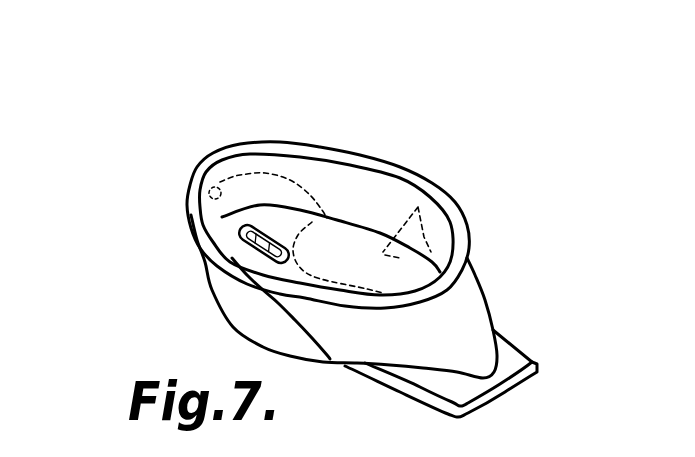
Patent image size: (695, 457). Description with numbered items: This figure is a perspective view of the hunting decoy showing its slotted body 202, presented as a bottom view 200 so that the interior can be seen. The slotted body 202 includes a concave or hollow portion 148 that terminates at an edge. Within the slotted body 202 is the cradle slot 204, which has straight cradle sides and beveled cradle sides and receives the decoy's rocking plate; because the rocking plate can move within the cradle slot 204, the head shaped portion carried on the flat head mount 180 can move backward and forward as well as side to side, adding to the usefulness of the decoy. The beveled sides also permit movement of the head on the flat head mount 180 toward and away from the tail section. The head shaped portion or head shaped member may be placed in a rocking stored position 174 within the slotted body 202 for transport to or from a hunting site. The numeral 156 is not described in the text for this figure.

The hollow portion 148 is at (380, 205).
The rim of the container 156 is at (226, 150).
The rocking stored position 174 is at (363, 258).
The flat head mount 180 is at (212, 208).
The bottom view 200 is at (350, 112).
The slotted body 202 is at (500, 250).
The cradle slot 204 is at (250, 247).